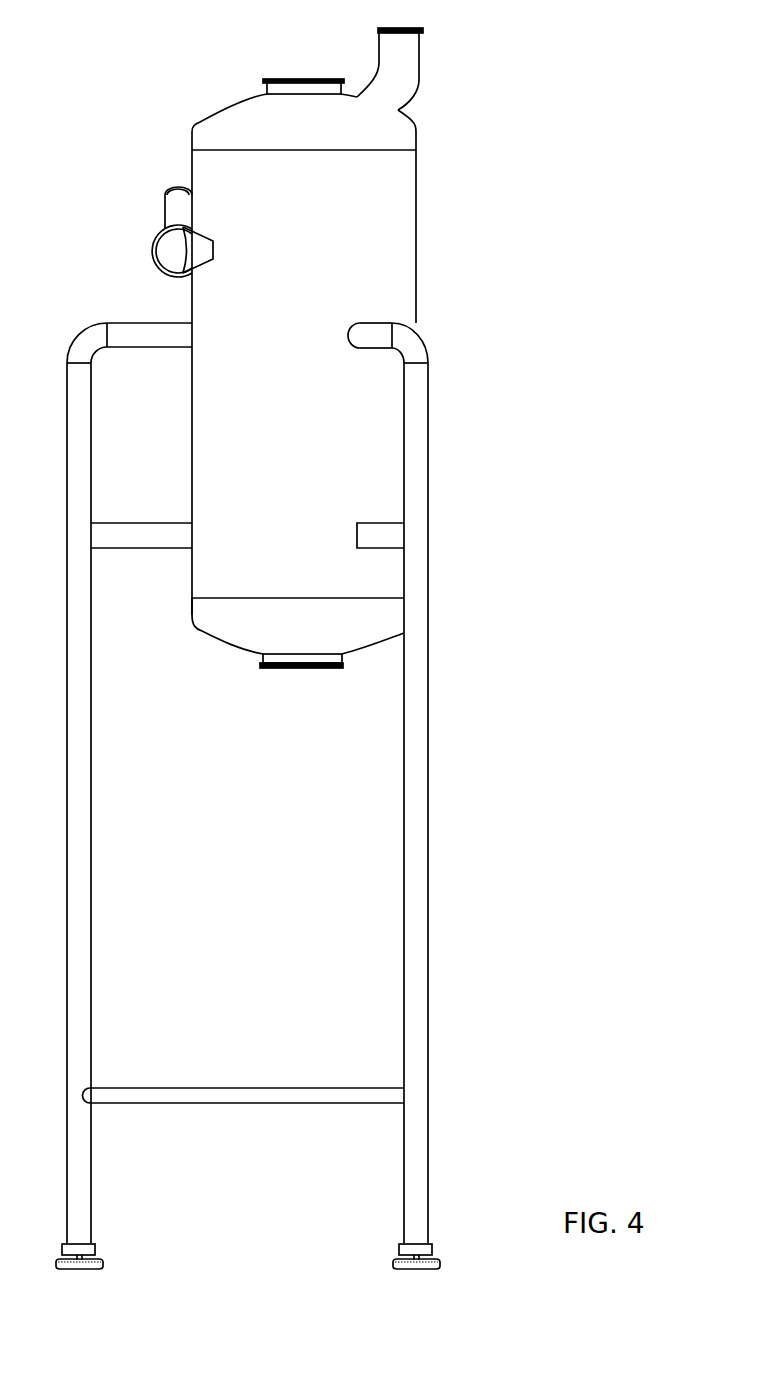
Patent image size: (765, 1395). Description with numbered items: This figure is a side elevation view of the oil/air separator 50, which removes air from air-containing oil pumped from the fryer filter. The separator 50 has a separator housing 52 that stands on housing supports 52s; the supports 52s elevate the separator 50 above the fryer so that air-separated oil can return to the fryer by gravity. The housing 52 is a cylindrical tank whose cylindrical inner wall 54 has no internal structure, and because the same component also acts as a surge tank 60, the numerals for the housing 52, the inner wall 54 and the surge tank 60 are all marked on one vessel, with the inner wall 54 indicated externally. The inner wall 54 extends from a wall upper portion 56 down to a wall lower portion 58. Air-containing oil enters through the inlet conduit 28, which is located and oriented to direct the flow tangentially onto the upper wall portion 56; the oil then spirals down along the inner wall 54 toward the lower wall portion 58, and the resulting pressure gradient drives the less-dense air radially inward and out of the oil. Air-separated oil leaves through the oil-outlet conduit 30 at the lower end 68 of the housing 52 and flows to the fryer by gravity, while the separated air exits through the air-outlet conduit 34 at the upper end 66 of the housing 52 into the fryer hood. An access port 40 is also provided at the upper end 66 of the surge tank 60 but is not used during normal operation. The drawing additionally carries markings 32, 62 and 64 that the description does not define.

The oil/air separator 50 is at (537, 194).
The separator housing 52 is at (318, 260).
The housing supports 52s is at (80, 775).
The cylindrical inner wall 54 is at (318, 318).
The wall upper portion 56 is at (400, 170).
The wall lower portion 58 is at (213, 623).
The surge tank 60 is at (318, 378).
The upper seam 62 is at (403, 185).
The lower head 64 is at (367, 626).
The upper end 66 is at (398, 135).
The lower end 68 is at (355, 635).
The access port 40 is at (292, 77).
The air-outlet conduit 34 is at (402, 64).
The oil-outlet conduit 30 is at (278, 658).
The inlet conduit 28 is at (168, 253).
The vent fitting 32 is at (182, 202).